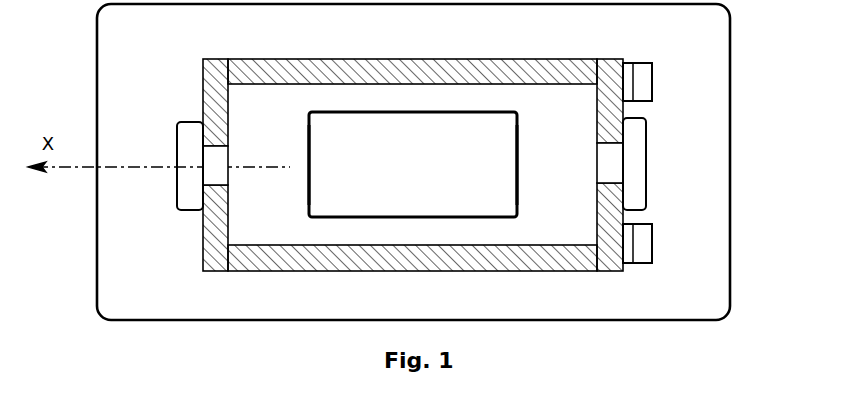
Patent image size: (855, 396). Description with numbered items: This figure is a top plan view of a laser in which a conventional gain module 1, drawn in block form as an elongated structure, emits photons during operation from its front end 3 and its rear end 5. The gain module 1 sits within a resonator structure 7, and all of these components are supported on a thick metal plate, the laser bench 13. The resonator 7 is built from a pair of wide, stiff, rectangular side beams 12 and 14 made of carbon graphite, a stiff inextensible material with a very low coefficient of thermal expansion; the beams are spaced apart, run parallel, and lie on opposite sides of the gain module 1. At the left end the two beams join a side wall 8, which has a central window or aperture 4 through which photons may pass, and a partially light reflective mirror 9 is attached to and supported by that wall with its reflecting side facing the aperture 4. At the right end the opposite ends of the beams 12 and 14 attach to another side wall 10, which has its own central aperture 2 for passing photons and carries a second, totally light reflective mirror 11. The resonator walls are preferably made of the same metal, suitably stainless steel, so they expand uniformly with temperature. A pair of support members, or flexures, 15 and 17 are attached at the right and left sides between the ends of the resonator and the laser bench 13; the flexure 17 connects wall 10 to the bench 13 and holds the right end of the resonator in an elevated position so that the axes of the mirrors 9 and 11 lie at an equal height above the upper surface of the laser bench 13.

The gain module 1 is at (406, 159).
The central aperture 2 is at (597, 170).
The front end 3 is at (309, 147).
The central window or aperture 4 is at (228, 168).
The rear end 5 is at (517, 172).
The resonator structure 7 is at (413, 146).
The side wall 8 is at (228, 104).
The mirror 9 is at (177, 135).
The side wall 10 is at (597, 124).
The second mirror 11 is at (646, 156).
The side beam 12 is at (327, 59).
The laser bench 13 is at (731, 80).
The side beam 14 is at (284, 245).
The flexure 15 is at (652, 88).
The flexure 17 is at (652, 245).